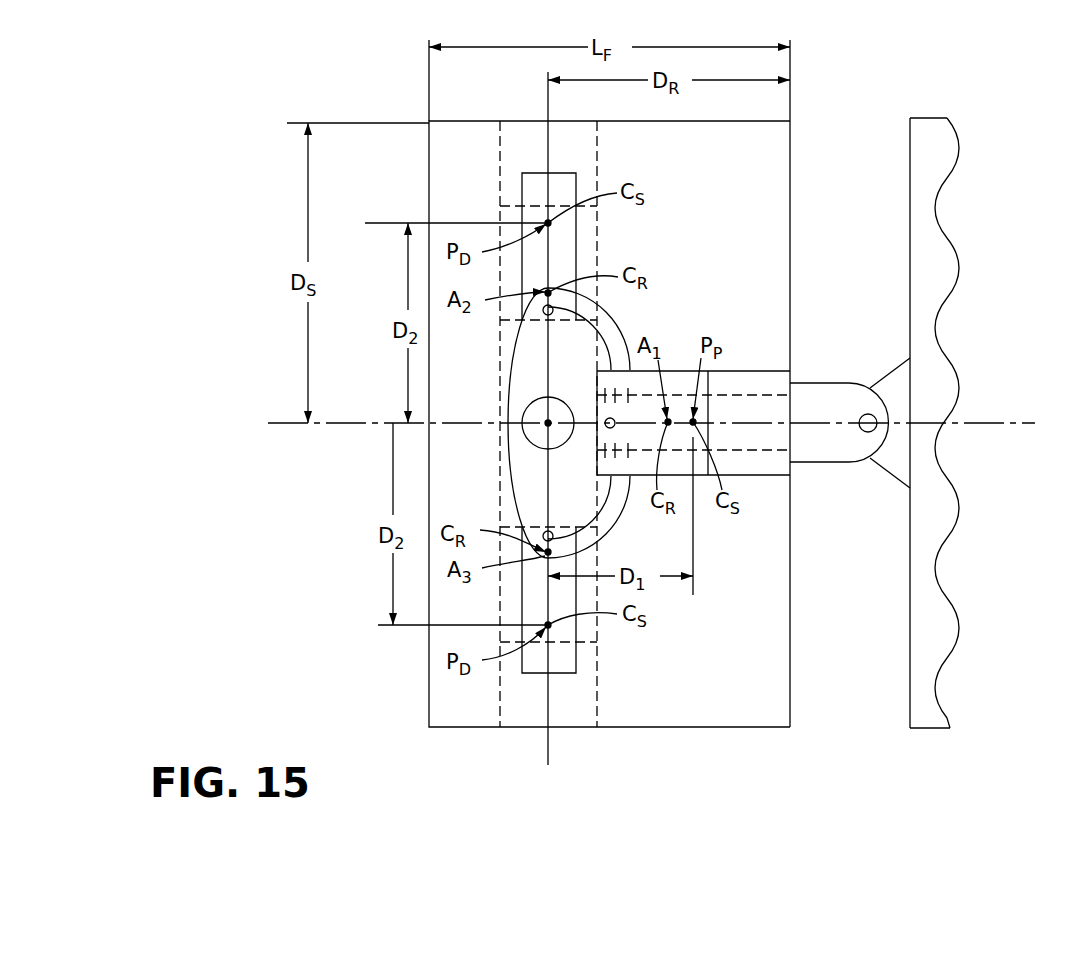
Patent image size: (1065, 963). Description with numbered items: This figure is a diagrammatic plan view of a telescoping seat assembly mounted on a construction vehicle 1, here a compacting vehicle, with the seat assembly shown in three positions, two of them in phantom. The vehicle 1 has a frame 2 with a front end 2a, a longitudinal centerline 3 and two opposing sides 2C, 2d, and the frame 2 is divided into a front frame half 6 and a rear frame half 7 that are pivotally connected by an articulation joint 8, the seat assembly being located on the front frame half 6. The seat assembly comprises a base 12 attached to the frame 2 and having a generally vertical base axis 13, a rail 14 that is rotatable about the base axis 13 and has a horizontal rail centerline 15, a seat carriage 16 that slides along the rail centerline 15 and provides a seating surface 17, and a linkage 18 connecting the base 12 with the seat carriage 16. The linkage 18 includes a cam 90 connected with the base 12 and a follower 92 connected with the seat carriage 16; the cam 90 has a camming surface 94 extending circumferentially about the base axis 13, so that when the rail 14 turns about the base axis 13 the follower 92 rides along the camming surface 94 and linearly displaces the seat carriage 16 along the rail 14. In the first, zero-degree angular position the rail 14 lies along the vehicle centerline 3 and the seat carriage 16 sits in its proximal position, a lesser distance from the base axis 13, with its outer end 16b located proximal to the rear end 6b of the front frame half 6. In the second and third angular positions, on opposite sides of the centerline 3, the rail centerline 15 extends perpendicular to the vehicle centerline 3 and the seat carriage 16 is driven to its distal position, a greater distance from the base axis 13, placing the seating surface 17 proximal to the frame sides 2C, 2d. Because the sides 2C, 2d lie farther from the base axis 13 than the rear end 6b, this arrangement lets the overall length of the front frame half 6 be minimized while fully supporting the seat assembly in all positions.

The construction vehicle 1 is at (480, 795).
The frame 2 is at (566, 439).
The front end 2a is at (429, 665).
The side 2C is at (652, 727).
The side 2d is at (480, 120).
The longitudinal centerline 3 is at (976, 423).
The front frame half 6 is at (810, 429).
The rear end 6b is at (791, 623).
The rear frame half 7 is at (945, 710).
The articulation joint 8 is at (753, 439).
The base 12 is at (521, 433).
The base axis 13 is at (523, 403).
The rail 14 is at (579, 250).
The rail centerline 15 is at (547, 100).
The seat carriage 16 is at (498, 155).
The outer end 16b is at (790, 470).
The seating surface 17 is at (585, 148).
The linkage 18 is at (630, 326).
The cam 90 is at (509, 352).
The follower 92 is at (543, 314).
The camming surface 94 is at (600, 505).